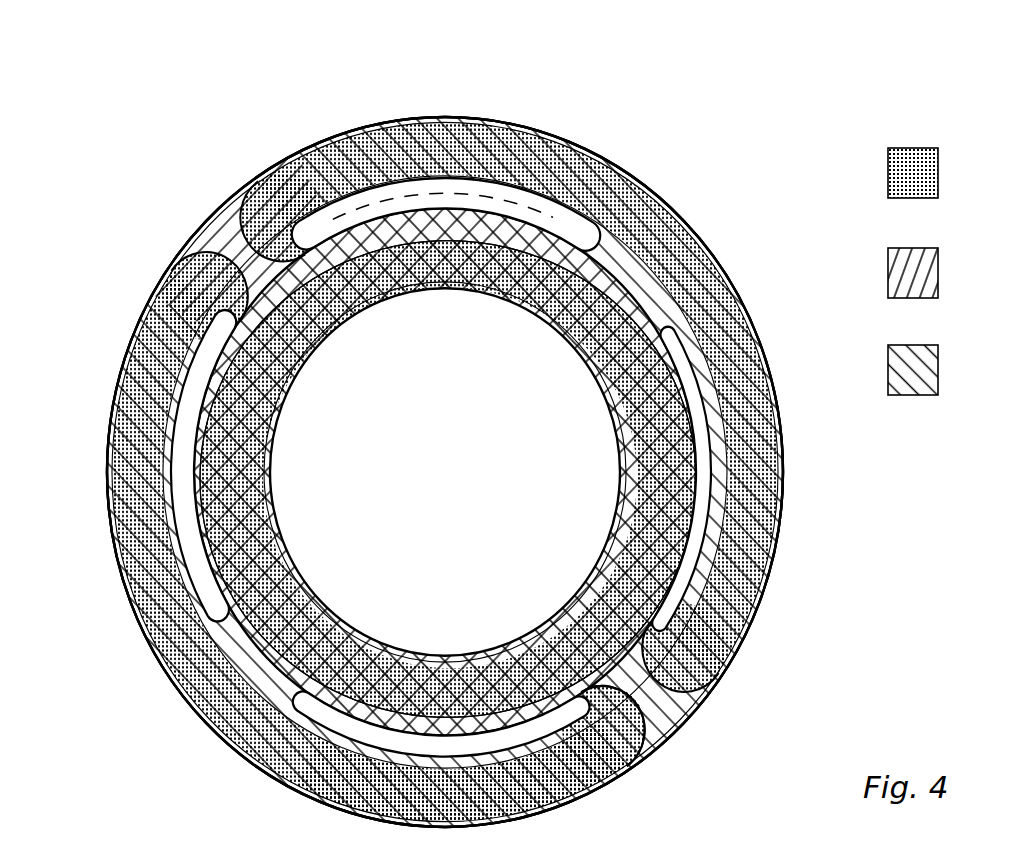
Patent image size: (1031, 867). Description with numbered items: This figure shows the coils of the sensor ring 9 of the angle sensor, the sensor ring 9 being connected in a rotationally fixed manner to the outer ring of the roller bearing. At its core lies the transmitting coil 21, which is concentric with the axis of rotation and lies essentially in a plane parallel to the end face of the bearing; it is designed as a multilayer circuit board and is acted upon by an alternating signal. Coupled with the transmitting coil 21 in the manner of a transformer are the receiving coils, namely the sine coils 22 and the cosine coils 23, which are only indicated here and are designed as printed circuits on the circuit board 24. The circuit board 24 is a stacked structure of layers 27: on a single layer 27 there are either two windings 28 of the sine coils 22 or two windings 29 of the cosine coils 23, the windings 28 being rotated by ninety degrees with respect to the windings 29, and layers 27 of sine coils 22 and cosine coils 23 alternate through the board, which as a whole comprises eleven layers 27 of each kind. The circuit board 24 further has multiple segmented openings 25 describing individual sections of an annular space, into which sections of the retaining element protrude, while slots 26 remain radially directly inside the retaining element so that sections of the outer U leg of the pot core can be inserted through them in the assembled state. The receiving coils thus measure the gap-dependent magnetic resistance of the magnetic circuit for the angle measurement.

The sensor ring 9 is at (198, 90).
The transmitting coil 21 is at (688, 540).
The sine coil 22 is at (703, 688).
The cosine coil 23 is at (240, 655).
The circuit board 24 is at (650, 188).
The segmented opening 25 is at (712, 462).
The slot 26 is at (493, 192).
The layer 27 is at (750, 627).
The winding of sine coil 28 is at (662, 745).
The winding of cosine coil 29 is at (240, 655).